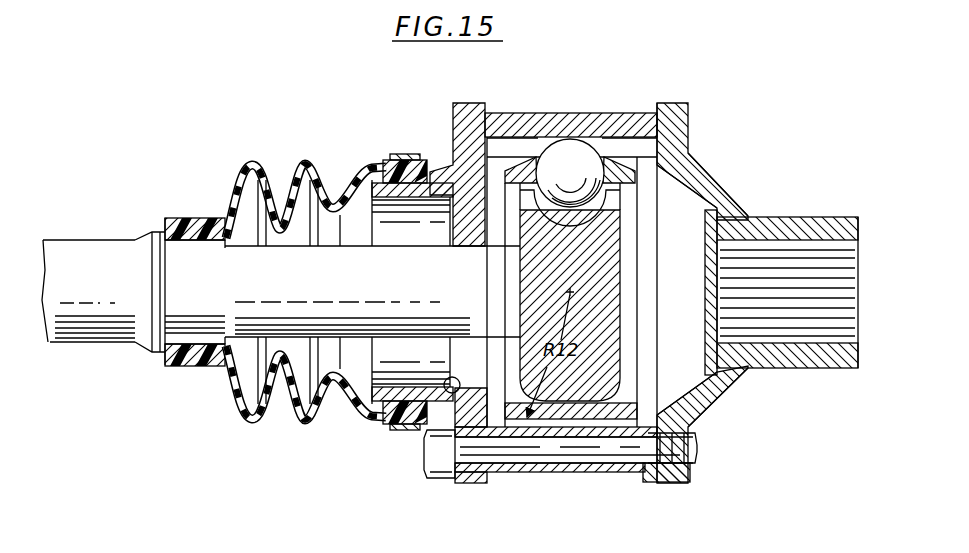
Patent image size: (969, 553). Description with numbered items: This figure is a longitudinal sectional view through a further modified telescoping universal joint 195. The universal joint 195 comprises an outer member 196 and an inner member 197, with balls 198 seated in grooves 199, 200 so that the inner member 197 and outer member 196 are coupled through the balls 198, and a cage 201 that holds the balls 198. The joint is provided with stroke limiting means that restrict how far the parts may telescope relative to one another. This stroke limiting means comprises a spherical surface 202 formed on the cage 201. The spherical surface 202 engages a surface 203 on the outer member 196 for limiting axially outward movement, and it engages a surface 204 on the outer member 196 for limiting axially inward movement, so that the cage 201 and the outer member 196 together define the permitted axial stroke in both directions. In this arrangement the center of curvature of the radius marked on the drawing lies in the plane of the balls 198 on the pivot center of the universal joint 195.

The universal joint 195 is at (550, 112).
The outer member 196 is at (609, 121).
The inner member 197 is at (598, 250).
The balls 198 is at (555, 160).
The groove 199 is at (642, 143).
The groove 200 is at (642, 200).
The cage 201 is at (627, 396).
The spherical surface 202 is at (618, 410).
The surface 203 is at (427, 395).
The surface 204 is at (707, 395).